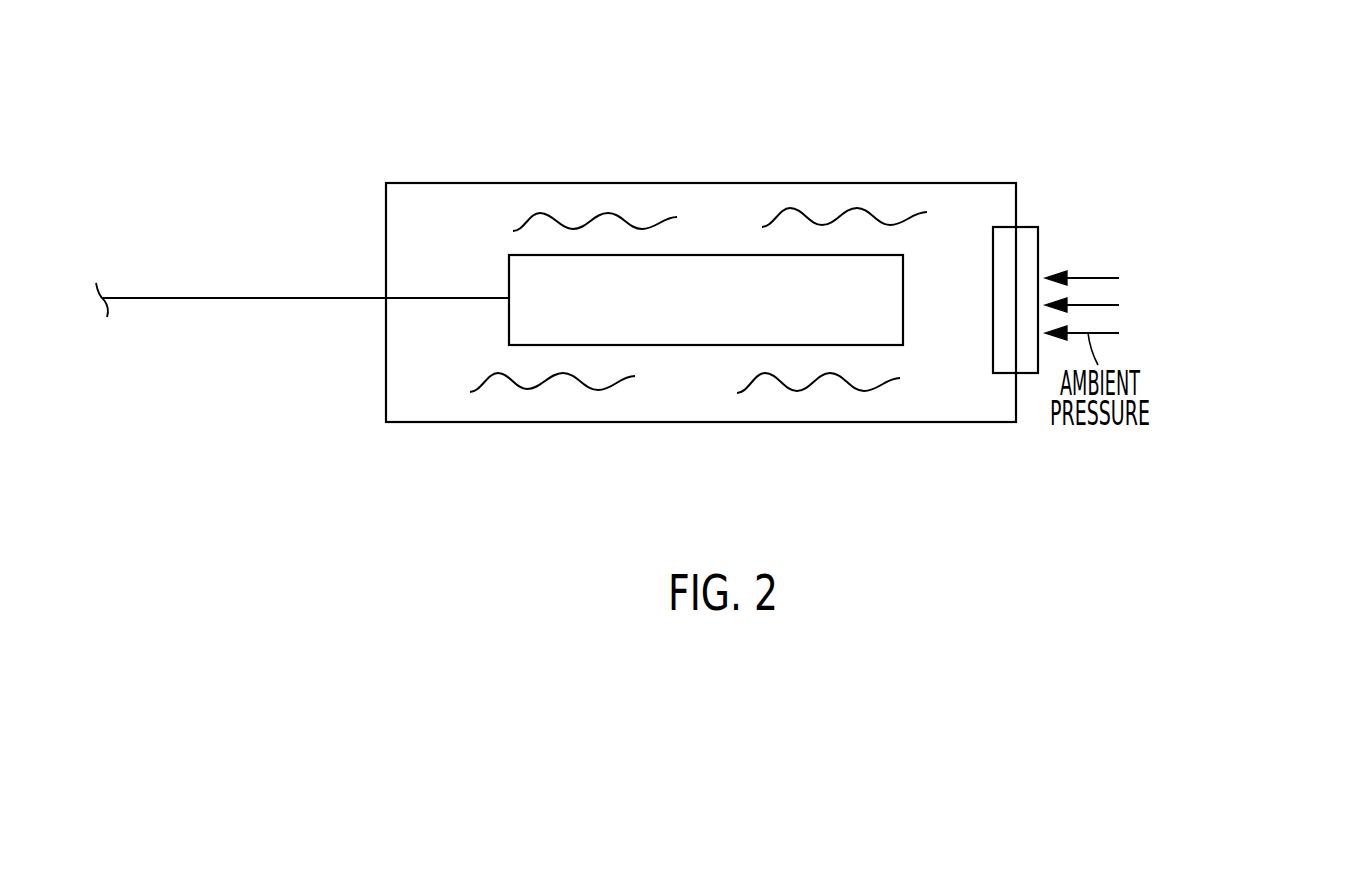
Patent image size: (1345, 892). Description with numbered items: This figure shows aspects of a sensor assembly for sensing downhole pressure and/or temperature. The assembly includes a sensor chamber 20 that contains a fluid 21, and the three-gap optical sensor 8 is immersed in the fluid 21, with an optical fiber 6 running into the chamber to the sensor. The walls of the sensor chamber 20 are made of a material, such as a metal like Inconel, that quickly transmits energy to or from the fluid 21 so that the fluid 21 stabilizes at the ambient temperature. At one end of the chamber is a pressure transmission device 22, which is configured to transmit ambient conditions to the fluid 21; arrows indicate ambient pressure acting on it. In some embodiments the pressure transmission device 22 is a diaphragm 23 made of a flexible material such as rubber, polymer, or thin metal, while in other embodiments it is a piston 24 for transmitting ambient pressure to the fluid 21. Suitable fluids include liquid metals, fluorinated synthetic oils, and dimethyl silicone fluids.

The optical fiber 6 is at (249, 298).
The 3-gap optical sensor 8 is at (905, 306).
The sensor chamber 20 is at (488, 183).
The fluid 21 is at (527, 389).
The pressure transmission device 22 is at (1112, 281).
The diaphragm 23 is at (977, 301).
The piston 24 is at (1000, 340).